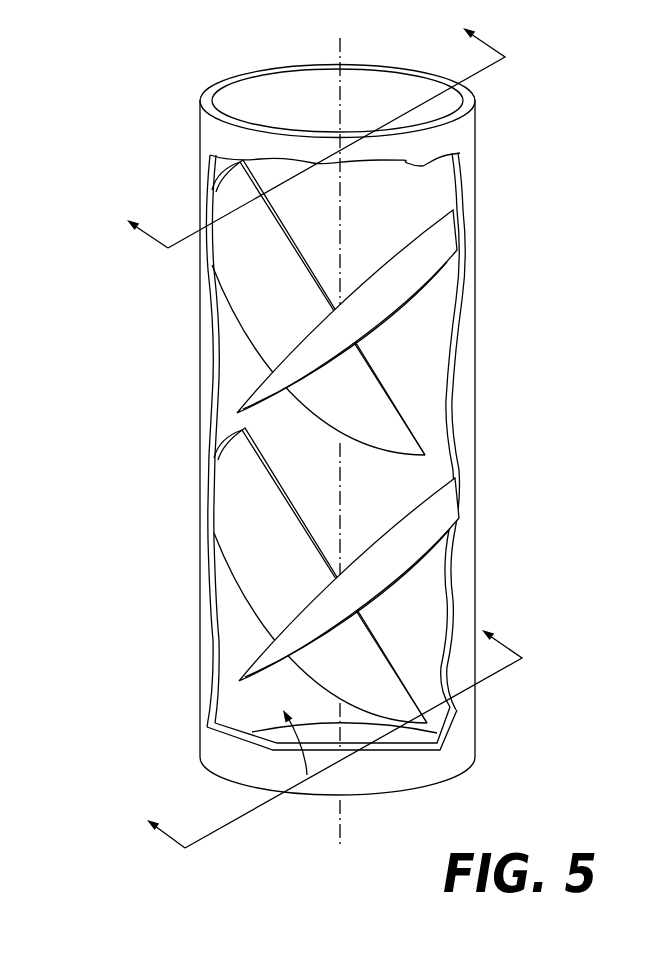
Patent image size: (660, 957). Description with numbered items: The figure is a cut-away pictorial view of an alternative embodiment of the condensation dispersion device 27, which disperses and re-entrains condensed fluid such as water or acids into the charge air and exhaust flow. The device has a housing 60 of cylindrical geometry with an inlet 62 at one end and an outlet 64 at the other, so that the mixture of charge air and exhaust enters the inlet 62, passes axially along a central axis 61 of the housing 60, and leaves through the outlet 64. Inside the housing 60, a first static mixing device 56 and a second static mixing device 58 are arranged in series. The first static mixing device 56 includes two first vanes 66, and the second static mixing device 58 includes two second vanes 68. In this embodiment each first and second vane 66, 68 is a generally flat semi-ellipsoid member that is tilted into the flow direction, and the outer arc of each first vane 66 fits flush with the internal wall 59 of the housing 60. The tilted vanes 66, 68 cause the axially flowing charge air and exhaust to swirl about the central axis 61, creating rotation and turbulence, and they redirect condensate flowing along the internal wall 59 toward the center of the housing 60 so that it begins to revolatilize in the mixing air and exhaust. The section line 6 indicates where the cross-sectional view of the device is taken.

The condensation dispersion device 27 is at (142, 89).
The inlet 62 is at (288, 103).
The central axis 61 is at (342, 88).
The outlet 64 is at (383, 797).
The first static mixing device 56 is at (365, 226).
The first vanes 66 is at (282, 273).
The second vanes 68 is at (264, 488).
The internal wall 59 is at (223, 347).
The housing 60 is at (204, 598).
The second static mixing device 58 is at (290, 749).
The section line 6- 6 is at (324, 428).